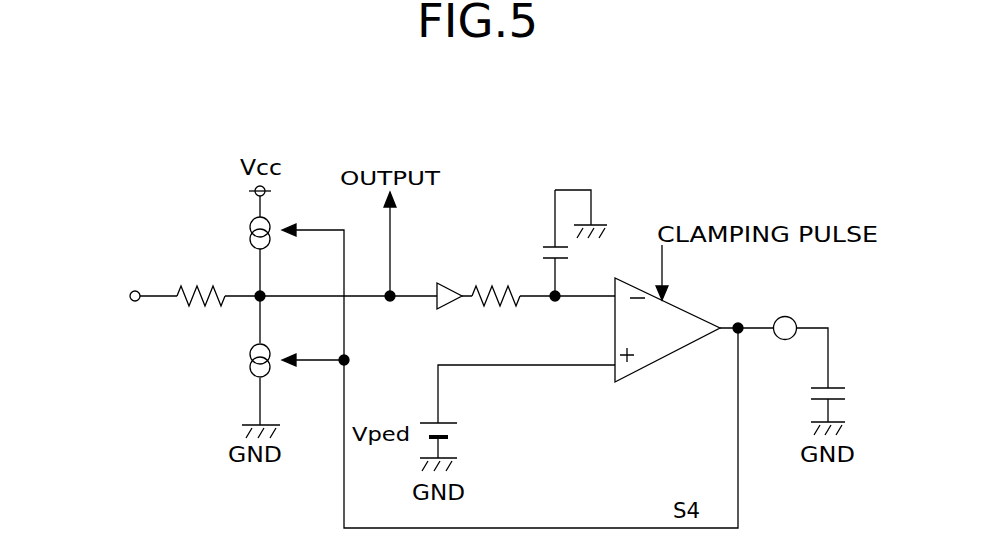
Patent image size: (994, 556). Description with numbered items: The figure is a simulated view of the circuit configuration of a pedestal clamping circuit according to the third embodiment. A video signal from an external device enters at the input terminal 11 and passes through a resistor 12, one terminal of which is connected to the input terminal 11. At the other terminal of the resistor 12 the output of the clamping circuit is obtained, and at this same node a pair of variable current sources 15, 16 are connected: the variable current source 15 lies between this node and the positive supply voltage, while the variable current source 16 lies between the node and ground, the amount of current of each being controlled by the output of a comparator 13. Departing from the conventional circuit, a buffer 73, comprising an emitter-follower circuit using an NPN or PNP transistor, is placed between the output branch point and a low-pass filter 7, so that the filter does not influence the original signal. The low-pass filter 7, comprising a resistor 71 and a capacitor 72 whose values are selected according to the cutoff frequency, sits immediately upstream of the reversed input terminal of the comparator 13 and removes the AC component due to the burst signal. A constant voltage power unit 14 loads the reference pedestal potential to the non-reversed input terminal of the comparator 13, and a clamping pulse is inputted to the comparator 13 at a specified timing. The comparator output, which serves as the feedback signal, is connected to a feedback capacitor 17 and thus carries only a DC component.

The low-pass filter 7 is at (606, 205).
The input terminal 11 is at (133, 291).
The resistor 12 is at (186, 306).
The comparator 13 is at (685, 315).
The constant voltage power unit 14 is at (460, 428).
The variable current source 15 is at (243, 232).
The variable current source 16 is at (243, 360).
The feedback capacitor 17 is at (810, 400).
The resistor 71 is at (502, 278).
The capacitor 72 is at (568, 256).
The buffer 73 is at (455, 282).